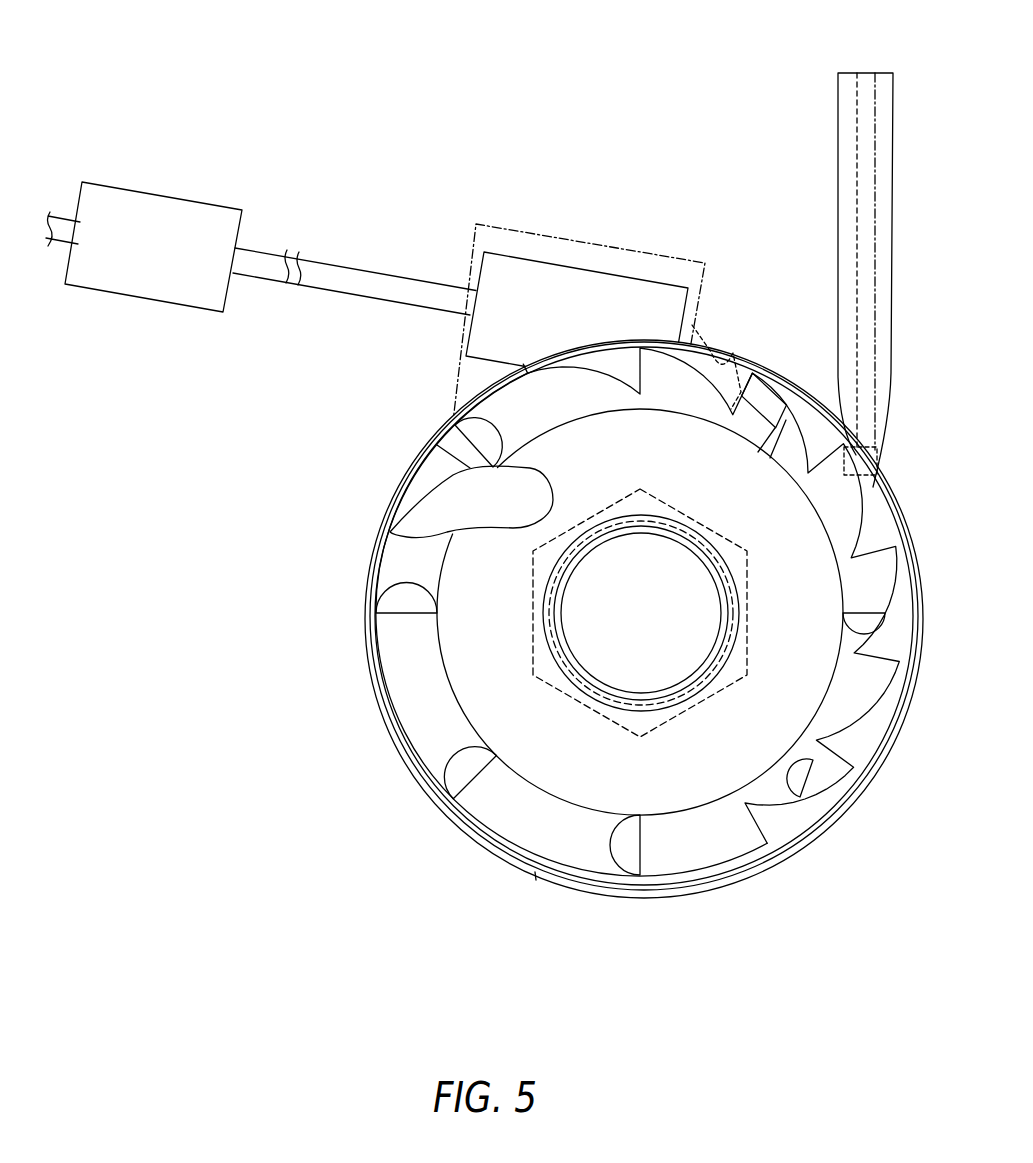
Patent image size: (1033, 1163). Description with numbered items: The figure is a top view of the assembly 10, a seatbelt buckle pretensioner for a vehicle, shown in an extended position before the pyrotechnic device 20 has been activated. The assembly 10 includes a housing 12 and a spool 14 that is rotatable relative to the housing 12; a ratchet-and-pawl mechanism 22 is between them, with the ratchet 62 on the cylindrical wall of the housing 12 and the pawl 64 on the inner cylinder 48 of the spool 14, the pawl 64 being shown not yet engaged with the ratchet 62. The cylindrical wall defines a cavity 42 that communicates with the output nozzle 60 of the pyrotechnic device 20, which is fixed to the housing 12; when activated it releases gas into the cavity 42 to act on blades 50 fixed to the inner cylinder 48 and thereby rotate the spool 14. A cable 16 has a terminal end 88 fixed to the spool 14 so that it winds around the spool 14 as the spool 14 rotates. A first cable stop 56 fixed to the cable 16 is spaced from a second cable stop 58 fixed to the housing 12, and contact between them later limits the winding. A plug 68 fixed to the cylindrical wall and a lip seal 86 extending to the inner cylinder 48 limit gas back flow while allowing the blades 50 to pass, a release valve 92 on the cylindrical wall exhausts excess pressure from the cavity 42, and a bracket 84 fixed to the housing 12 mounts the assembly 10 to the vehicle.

The assembly 10 is at (195, 62).
The housing 12 is at (366, 678).
The spool 14 is at (438, 740).
The cable 16 is at (348, 270).
The pyrotechnic device 20 is at (838, 120).
The ratchet-and-pawl mechanism 22 is at (368, 505).
The cavity 42 is at (510, 810).
The inner cylinder 48 is at (680, 775).
The blade 50 is at (480, 433).
The first cable stop 56 is at (205, 195).
The second cable stop 58 is at (560, 262).
The output nozzle 60 is at (857, 268).
The ratchet 62 is at (615, 362).
The pawl 64 is at (460, 505).
The plug 68 is at (740, 393).
The bracket 84 is at (668, 256).
The lip seal 86 is at (768, 440).
The terminal end 88 is at (535, 878).
The release valve 92 is at (732, 345).